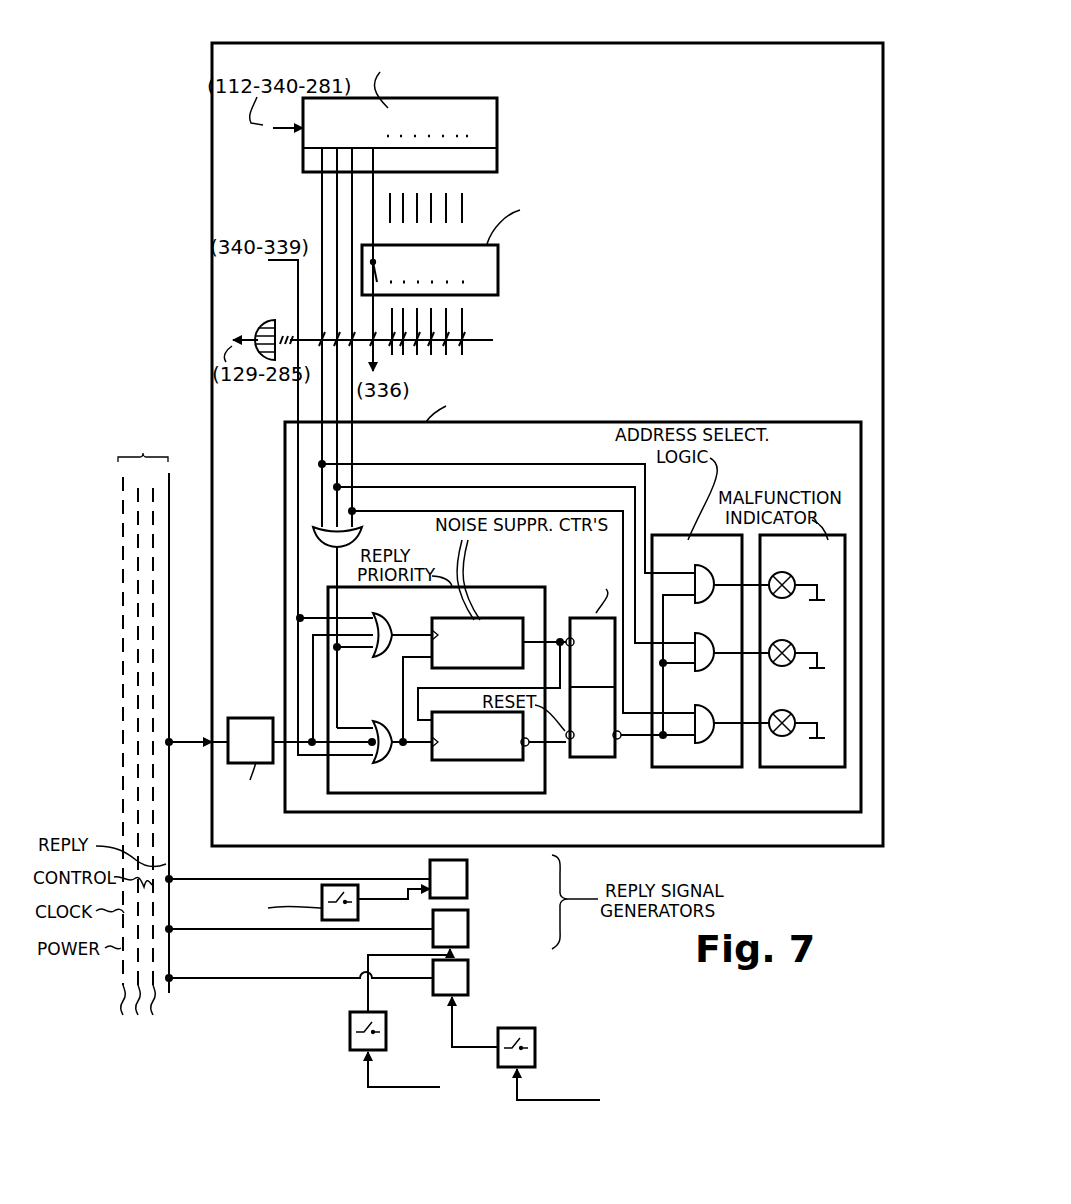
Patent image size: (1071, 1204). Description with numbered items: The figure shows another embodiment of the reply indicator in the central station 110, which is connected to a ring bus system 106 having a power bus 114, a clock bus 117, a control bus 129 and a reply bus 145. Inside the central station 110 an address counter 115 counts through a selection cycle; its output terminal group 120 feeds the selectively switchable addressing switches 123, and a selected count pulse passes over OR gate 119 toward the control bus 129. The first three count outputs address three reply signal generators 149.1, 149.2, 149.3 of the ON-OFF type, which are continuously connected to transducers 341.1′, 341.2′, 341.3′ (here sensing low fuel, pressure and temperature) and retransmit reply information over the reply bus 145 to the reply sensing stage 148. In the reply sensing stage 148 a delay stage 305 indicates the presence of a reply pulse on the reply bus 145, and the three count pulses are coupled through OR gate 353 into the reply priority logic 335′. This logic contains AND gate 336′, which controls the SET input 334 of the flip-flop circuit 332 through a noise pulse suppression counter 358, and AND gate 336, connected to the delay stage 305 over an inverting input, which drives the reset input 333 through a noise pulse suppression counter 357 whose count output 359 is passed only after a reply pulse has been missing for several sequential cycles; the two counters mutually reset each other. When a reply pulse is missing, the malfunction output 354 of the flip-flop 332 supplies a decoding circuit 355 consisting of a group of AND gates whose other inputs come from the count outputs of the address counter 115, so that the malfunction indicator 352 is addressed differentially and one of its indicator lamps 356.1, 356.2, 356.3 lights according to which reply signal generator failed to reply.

The central station 110 is at (792, 58).
The address counter 115 is at (482, 108).
The output terminal group of address counter 120 is at (482, 158).
The addressing switches 123 is at (483, 263).
The OR gate 119 is at (270, 322).
The reply sensing stage 148 is at (806, 438).
The coupling OR gate 353 is at (355, 538).
The reply priority logic 335′ is at (512, 602).
The noise pulse suppression counter 358 is at (454, 631).
The noise pulse suppression counter 357 is at (454, 746).
The count output of noise suppression counter 359 is at (520, 746).
The AND gate 336 is at (378, 656).
The AND gate 336′ is at (385, 717).
The SET input 334 is at (568, 638).
The reset input 333 is at (566, 740).
The flip-flop circuit 332 is at (602, 758).
The malfunction output 354 is at (624, 740).
The decoding circuit 355 is at (728, 768).
The malfunction indicator 352 is at (796, 768).
The indicator lamp 356.1 is at (784, 566).
The indicator lamp 356.2 is at (784, 634).
The indicator lamp 356.3 is at (784, 702).
The delay stage 305 is at (240, 722).
The bus system 106 is at (143, 707).
The power bus 114 is at (134, 1016).
The control bus 129 is at (165, 1010).
The clock bus 117 is at (165, 1025).
The reply bus 145 is at (172, 990).
The reply signal generator 149.1 is at (465, 880).
The reply signal generator 149.2 is at (466, 930).
The reply signal generator 149.3 is at (466, 978).
The transducer 341.1′ is at (356, 910).
The transducer 341.2′ is at (350, 1030).
The transducer 341.3′ is at (535, 1033).